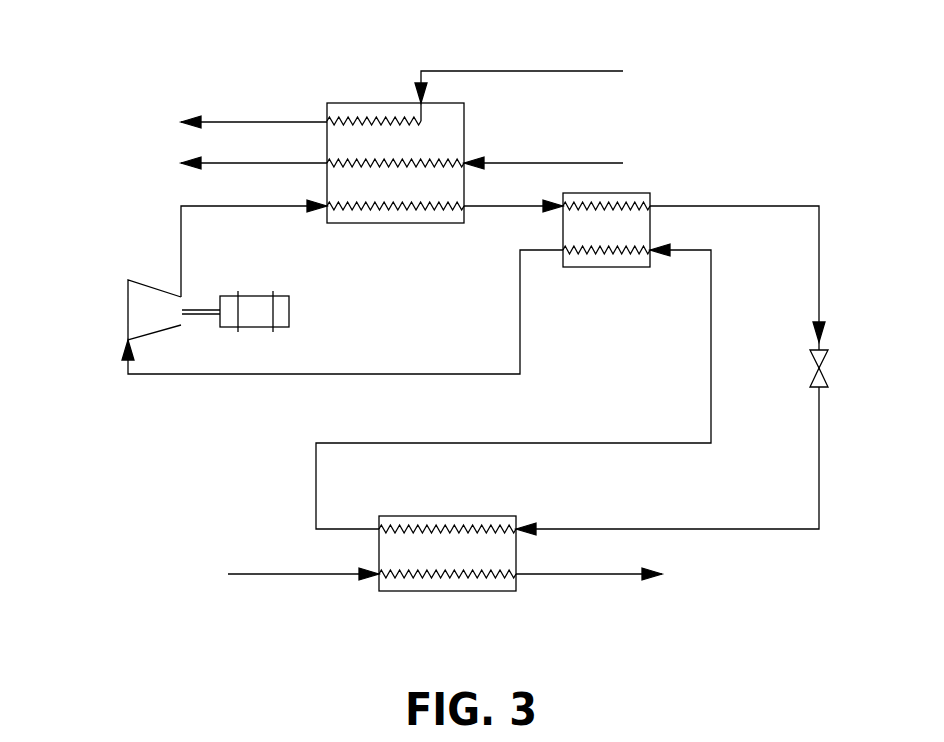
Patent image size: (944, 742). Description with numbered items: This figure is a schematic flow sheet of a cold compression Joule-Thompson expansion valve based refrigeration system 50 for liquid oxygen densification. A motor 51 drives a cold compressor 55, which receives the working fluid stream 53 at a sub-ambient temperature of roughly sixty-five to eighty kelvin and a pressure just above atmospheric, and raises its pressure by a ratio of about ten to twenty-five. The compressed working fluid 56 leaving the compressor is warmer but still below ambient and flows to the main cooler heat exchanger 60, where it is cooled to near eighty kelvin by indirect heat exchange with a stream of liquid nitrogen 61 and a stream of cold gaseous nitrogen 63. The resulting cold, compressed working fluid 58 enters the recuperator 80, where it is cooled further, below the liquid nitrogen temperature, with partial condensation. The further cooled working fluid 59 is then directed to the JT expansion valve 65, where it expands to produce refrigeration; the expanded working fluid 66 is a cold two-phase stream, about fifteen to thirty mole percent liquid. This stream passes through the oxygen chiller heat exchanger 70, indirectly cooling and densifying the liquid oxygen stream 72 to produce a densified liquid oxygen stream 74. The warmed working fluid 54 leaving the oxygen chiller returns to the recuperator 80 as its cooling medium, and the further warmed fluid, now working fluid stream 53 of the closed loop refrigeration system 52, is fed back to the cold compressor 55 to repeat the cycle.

The cold compression JT expansion valve based refrigeration system 50 is at (150, 64).
The motor 51 is at (289, 308).
The closed loop refrigeration system 52 is at (158, 446).
The working fluid stream 53 is at (268, 375).
The warmed working fluid 54 is at (680, 445).
The cold compressor 55 is at (128, 280).
The compressed working fluid stream 56 is at (220, 207).
The cold, compressed working fluid 58 is at (487, 207).
The further cooled working fluid 59 is at (795, 206).
The main cooler heat exchanger 60 is at (464, 135).
The stream of liquid nitrogen 61 is at (540, 163).
The stream of cold gaseous nitrogen 63 is at (512, 72).
The JT expansion valve 65 is at (822, 352).
The expanded working fluid 66 is at (757, 530).
The oxygen chiller heat exchanger 70 is at (505, 516).
The liquid oxygen stream 72 is at (325, 575).
The densified liquid oxygen stream 74 is at (557, 575).
The recuperator 80 is at (645, 193).